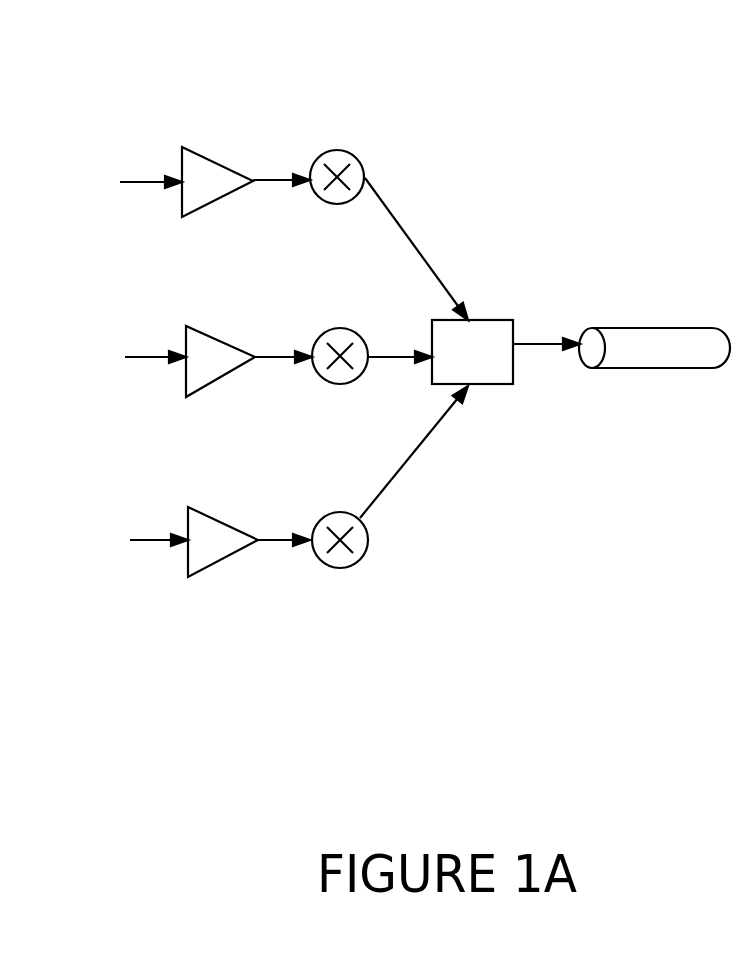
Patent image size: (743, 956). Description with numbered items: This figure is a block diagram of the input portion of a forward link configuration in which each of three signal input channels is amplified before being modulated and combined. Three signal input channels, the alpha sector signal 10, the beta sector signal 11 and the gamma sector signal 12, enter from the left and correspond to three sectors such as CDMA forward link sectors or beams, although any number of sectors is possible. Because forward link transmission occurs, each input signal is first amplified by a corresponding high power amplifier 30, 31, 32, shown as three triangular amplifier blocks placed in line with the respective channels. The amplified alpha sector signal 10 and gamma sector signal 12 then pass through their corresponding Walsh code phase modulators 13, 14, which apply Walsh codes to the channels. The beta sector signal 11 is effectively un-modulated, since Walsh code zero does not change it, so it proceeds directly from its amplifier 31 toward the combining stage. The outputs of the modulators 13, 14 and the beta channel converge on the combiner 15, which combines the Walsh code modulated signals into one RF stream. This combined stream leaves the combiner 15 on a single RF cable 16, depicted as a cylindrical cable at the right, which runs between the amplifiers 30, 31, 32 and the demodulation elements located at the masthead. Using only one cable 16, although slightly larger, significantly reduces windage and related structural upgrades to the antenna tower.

The alpha sector signal 10 is at (106, 204).
The beta sector signal 11 is at (107, 382).
The gamma sector signal 12 is at (340, 143).
The Walsh code modulator 13 is at (330, 320).
The Walsh code modulator 14 is at (342, 582).
The combiner 15 is at (492, 369).
The RF cable 16 is at (650, 316).
The high power amplifier 30 is at (221, 155).
The high power amplifier 31 is at (222, 328).
The high power amplifier 32 is at (224, 573).